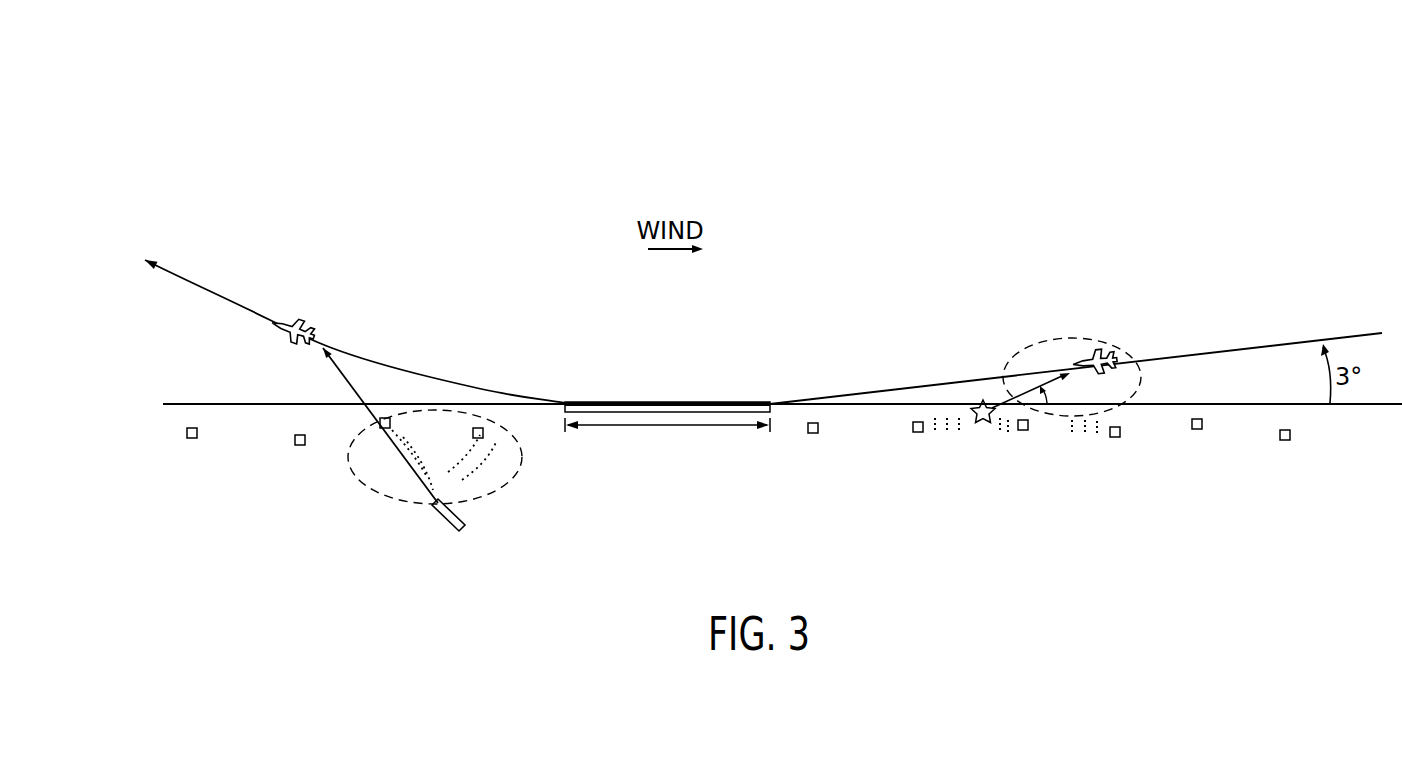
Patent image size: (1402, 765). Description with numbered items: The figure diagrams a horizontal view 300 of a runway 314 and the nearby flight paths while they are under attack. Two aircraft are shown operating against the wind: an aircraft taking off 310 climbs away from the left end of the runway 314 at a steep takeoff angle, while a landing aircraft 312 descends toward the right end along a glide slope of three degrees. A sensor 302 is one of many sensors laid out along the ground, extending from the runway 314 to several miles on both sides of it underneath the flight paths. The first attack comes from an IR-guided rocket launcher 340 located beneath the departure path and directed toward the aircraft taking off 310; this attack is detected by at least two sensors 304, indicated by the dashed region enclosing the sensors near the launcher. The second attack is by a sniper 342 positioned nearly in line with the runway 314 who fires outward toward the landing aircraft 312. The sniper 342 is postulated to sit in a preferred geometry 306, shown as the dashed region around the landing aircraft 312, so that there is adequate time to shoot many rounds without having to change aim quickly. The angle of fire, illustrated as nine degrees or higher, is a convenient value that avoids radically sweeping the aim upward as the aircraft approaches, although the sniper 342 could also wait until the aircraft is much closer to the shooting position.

The horizontal view 300 is at (396, 91).
The sensor 302 is at (814, 435).
The at least two sensors 304 is at (356, 486).
The preferred geometry 306 is at (1030, 345).
The aircraft taking off 310 is at (300, 325).
The landing aircraft 312 is at (1095, 354).
The runway 314 is at (667, 401).
The IR-guided rocket launcher 340 is at (446, 531).
The sniper 342 is at (979, 425).